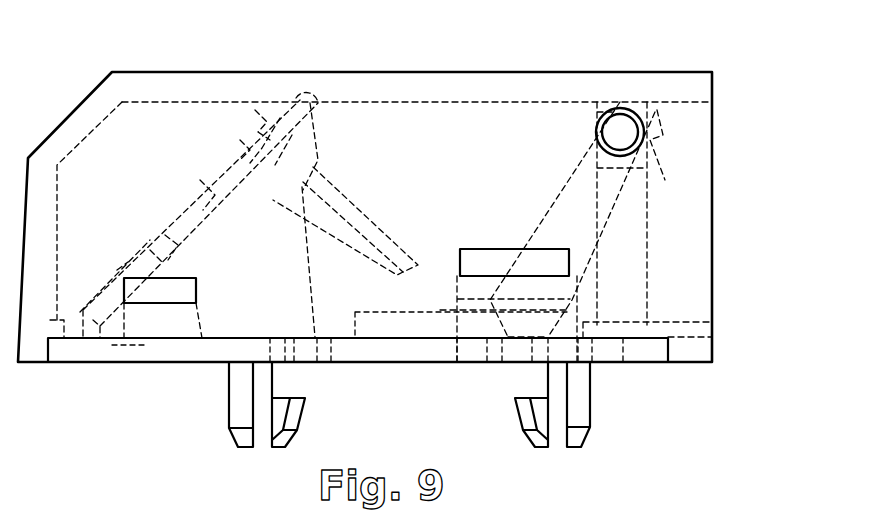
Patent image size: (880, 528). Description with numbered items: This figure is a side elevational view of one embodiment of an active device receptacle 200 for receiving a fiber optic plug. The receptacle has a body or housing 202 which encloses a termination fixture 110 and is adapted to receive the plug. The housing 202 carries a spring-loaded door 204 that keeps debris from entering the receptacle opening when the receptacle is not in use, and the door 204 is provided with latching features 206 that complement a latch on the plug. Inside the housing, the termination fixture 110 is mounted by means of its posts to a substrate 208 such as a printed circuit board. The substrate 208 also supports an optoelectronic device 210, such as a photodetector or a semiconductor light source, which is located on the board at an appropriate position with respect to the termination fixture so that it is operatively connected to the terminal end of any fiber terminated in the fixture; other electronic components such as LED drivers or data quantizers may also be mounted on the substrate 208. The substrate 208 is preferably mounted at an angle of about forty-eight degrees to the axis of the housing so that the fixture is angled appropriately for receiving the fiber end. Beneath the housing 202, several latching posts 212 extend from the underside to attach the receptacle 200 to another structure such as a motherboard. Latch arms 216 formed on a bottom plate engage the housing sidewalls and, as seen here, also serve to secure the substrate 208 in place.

The housing 202 is at (470, 64).
The active device receptacle 200 is at (156, 376).
The latching posts 212 is at (594, 390).
The latch arms 216 is at (174, 281).
The optoelectronic device 210 is at (240, 130).
The termination fixture 110 is at (358, 207).
The substrate 208 is at (117, 270).
The spring-loaded door 204 is at (543, 198).
The latching features 206 is at (643, 156).